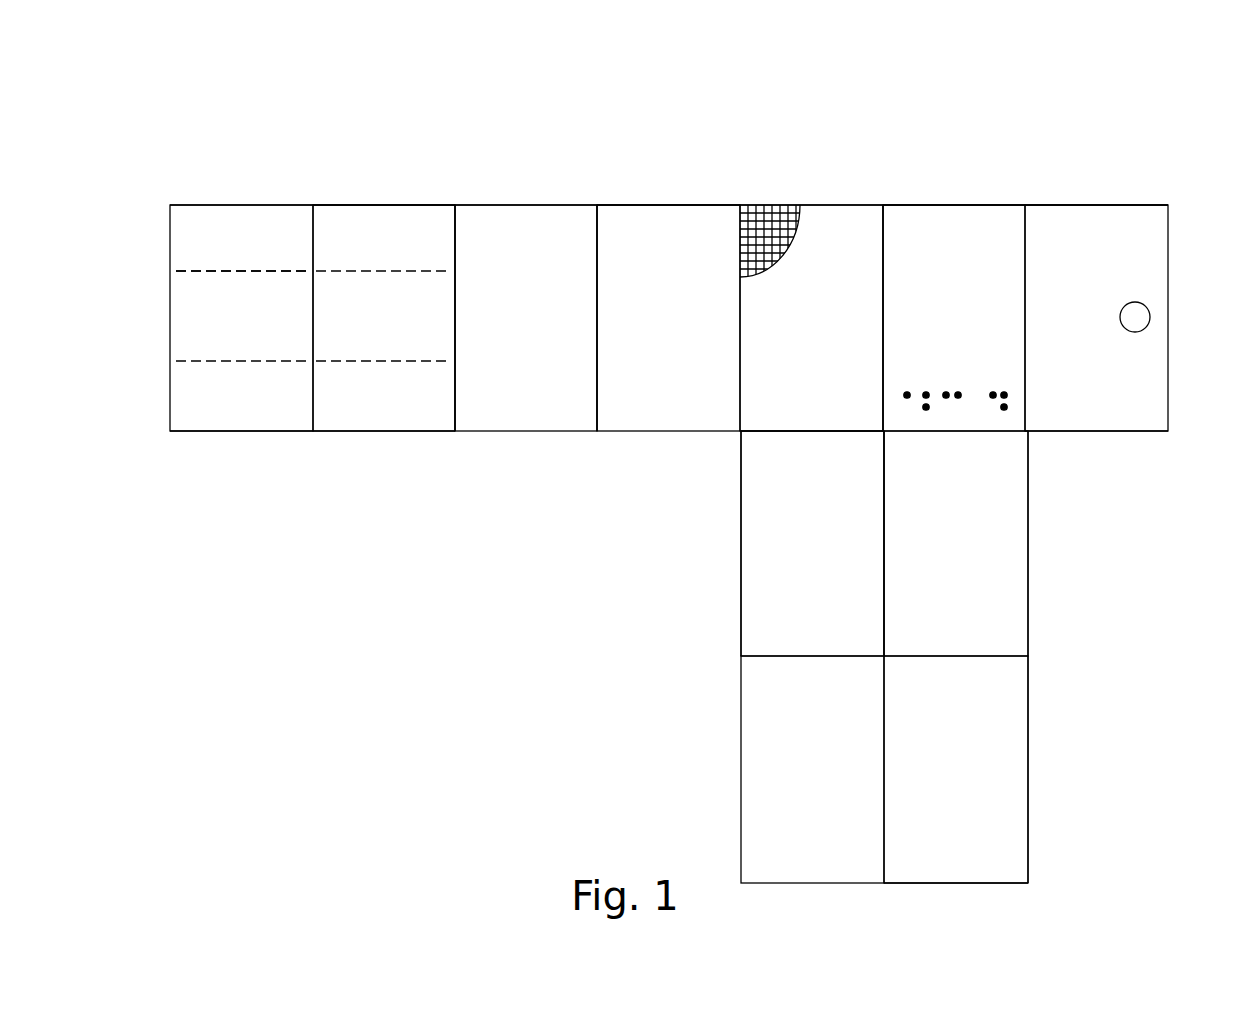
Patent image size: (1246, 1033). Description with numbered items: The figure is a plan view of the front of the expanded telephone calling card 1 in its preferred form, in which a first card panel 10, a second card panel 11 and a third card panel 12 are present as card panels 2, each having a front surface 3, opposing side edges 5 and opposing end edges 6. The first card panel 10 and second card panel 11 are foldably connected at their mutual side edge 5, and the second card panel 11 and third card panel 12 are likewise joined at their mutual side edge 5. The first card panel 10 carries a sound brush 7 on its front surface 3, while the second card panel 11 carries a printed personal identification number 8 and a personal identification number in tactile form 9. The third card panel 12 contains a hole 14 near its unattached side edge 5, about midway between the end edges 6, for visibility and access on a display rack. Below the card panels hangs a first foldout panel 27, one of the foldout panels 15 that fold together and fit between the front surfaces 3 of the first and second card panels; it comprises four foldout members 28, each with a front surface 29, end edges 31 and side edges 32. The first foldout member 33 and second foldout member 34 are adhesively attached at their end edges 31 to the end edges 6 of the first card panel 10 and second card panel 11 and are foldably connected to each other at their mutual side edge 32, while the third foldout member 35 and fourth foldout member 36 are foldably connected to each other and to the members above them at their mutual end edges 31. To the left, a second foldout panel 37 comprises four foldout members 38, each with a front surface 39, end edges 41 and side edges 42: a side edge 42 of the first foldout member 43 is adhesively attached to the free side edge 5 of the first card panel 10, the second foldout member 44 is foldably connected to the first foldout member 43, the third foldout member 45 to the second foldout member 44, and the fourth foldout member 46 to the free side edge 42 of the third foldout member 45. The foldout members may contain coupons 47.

The telephone calling card 1 is at (665, 118).
The card panel 2 is at (1094, 203).
The front surface 3 is at (1125, 398).
The side edge 5 is at (880, 268).
The end edge 6 is at (950, 205).
The sound brush 7 is at (770, 205).
The printed personal identification number 8 is at (967, 341).
The personal identification number in tactile form 9 is at (978, 405).
The first card panel 10 is at (793, 329).
The second card panel 11 is at (924, 327).
The third card panel 12 is at (1054, 329).
The hole 14 is at (1146, 318).
The foldout panel 15 is at (448, 482).
The first foldout panel 27 is at (1030, 727).
The foldout member 28 is at (1005, 795).
The front surface 29 is at (767, 522).
The end edge 31 is at (793, 432).
The side edge 32 is at (884, 627).
The first foldout member 33 is at (793, 559).
The second foldout member 34 is at (934, 559).
The third foldout member 35 is at (793, 769).
The fourth foldout member 36 is at (934, 769).
The second foldout panel 37 is at (383, 203).
The foldout member 38 is at (225, 418).
The front surface 39 is at (385, 415).
The end edge 41 is at (705, 205).
The side edge 42 is at (598, 232).
The first foldout member 43 is at (649, 331).
The second foldout member 44 is at (506, 331).
The third foldout member 45 is at (364, 331).
The fourth foldout member 46 is at (223, 331).
The coupon 47 is at (241, 218).